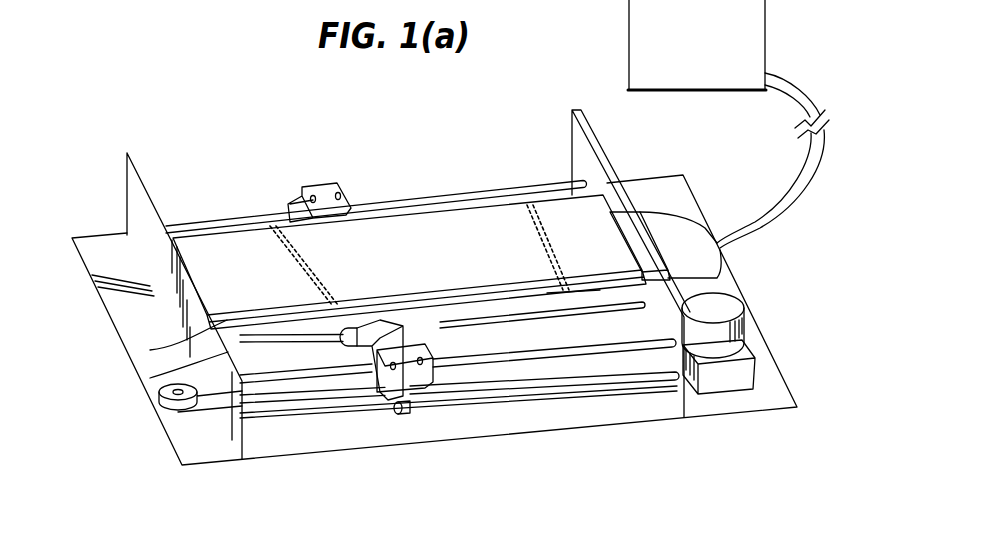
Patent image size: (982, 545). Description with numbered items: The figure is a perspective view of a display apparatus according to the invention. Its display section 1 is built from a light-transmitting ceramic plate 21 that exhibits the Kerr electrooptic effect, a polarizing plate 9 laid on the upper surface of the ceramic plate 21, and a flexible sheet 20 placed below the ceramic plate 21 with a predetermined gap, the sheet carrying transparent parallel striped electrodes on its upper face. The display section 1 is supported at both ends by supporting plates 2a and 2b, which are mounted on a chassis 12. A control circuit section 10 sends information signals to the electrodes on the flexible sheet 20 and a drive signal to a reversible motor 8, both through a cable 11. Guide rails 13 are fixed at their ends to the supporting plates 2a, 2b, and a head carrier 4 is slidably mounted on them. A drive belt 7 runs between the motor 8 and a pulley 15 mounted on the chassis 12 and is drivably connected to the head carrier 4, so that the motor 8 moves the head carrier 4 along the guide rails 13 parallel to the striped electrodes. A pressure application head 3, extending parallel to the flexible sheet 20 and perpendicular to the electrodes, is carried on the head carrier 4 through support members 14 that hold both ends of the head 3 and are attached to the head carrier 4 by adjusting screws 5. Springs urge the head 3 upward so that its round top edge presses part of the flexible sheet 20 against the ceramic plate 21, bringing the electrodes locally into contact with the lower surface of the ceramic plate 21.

The display section 1 is at (547, 293).
The supporting plate 2a is at (576, 110).
The supporting plate 2b is at (150, 183).
The pressure application head 3 is at (350, 210).
The head carrier 4 is at (372, 342).
The adjusting screws 5 is at (337, 193).
The drive belt 7 is at (327, 415).
The reversible motor 8 is at (752, 306).
The polarizing plate 9 is at (513, 222).
The control circuit section 10 is at (767, 42).
The cable 11 is at (713, 248).
The chassis 12 is at (567, 428).
The guide rails 13 is at (224, 220).
The support members 14 is at (410, 370).
The pulley 15 is at (170, 403).
The flexible sheet 20 is at (150, 378).
The light-transmitting ceramic plate 21 is at (150, 350).